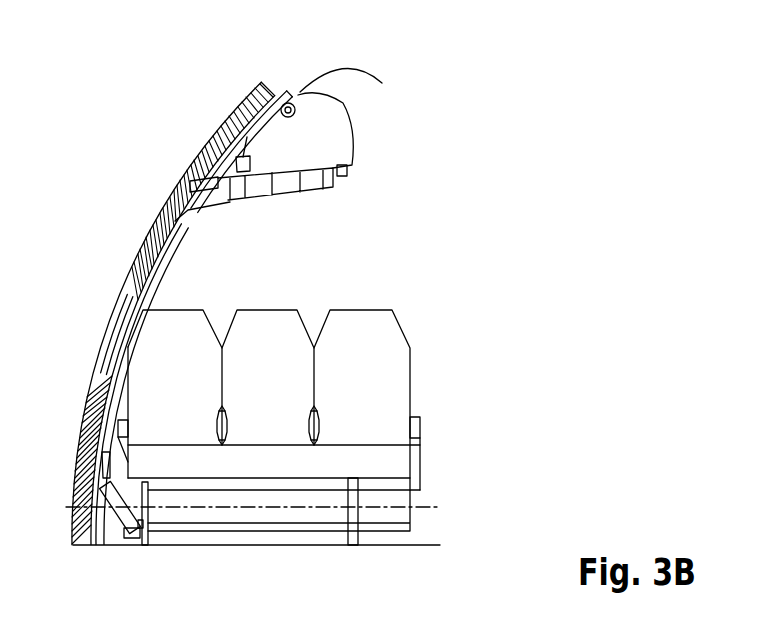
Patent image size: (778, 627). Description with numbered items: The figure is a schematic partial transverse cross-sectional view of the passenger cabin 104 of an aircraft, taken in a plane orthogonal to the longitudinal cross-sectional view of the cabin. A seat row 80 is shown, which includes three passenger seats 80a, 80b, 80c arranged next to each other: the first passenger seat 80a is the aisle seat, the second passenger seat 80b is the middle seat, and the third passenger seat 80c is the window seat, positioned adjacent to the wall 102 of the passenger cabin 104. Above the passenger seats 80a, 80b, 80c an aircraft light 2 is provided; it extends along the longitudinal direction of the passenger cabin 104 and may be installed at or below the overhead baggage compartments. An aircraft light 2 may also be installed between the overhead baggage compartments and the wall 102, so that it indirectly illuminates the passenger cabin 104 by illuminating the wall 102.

The passenger cabin 104 is at (131, 124).
The wall 102 is at (209, 136).
The third passenger seat 80c is at (178, 303).
The aircraft light 2 is at (242, 174).
The seat row 80 is at (288, 419).
The first passenger seat 80a is at (405, 310).
The second passenger seat 80b is at (266, 472).